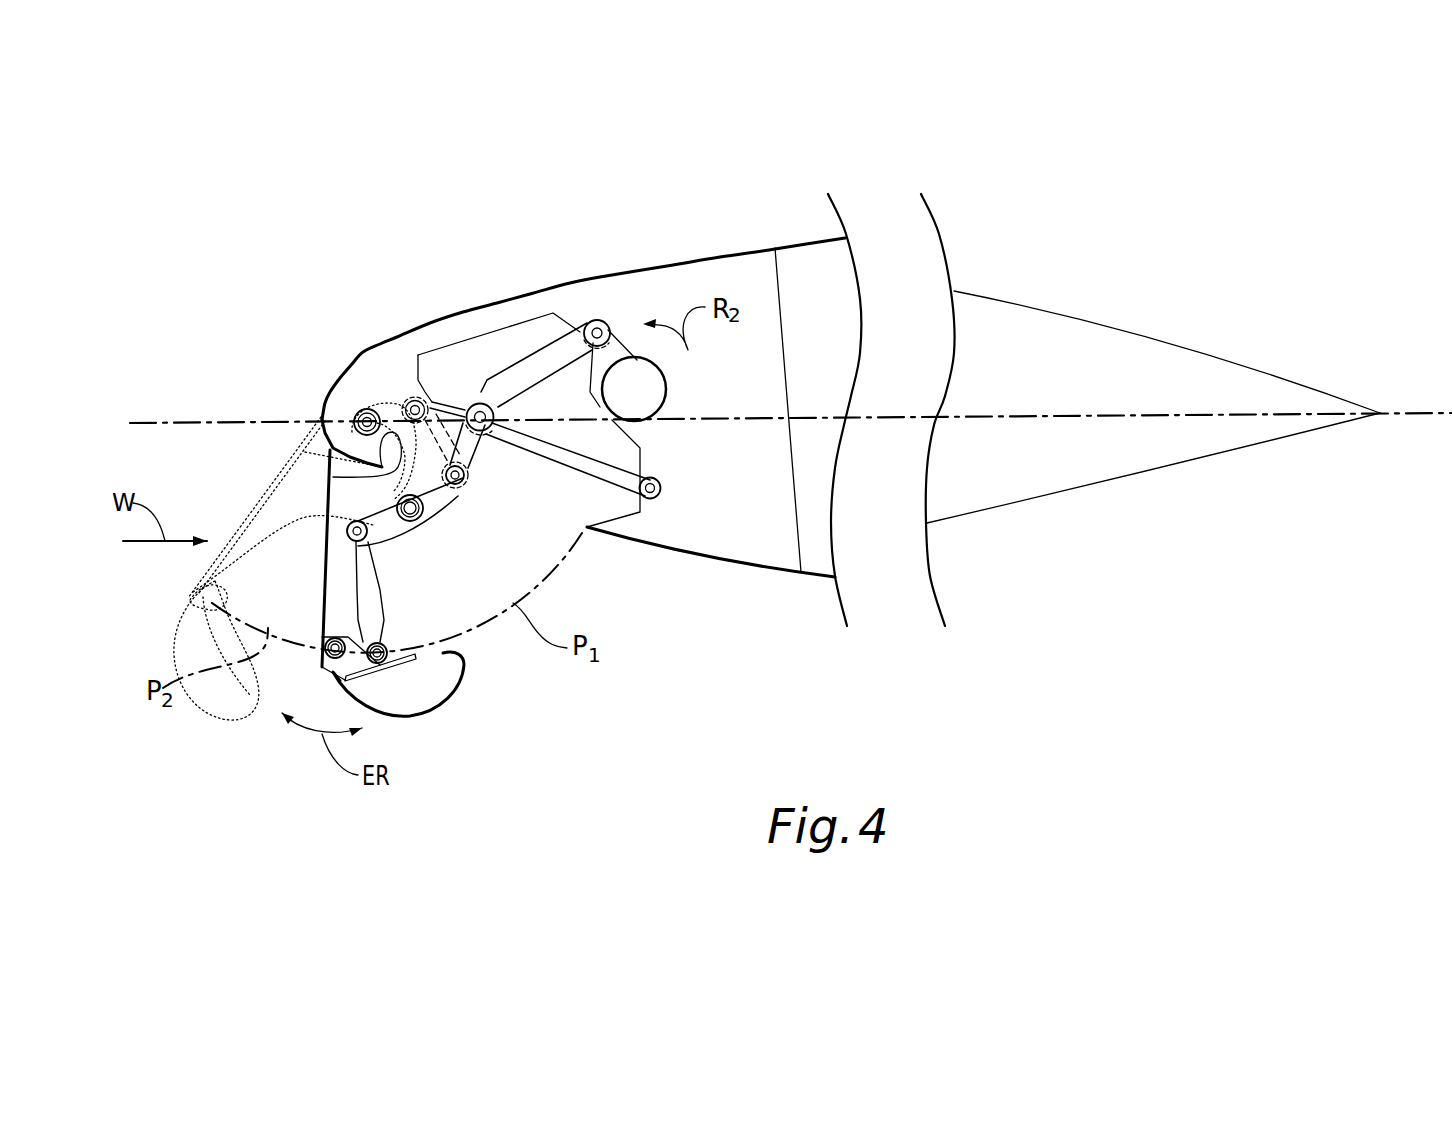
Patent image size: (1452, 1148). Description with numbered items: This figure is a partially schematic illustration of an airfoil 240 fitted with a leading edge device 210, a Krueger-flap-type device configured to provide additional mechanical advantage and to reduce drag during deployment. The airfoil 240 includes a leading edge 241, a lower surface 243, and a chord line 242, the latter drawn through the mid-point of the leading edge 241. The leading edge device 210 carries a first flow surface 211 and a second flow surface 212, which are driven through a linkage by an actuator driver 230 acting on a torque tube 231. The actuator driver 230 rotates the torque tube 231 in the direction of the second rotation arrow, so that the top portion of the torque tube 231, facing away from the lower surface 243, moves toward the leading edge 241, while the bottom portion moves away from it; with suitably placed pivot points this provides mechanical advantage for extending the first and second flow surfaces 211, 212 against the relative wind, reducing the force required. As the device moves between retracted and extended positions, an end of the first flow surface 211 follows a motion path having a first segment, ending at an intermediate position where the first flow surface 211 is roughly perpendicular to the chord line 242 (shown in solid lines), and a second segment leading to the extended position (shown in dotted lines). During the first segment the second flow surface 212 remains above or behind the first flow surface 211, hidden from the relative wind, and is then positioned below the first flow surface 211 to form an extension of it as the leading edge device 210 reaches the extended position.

The leading edge device 210 is at (288, 452).
The first flow surface 211 is at (318, 617).
The second flow surface 212 is at (445, 704).
The actuator driver 230 is at (684, 382).
The torque tube 231 is at (663, 404).
The airfoil 240 is at (982, 196).
The leading edge 241 is at (320, 414).
The chord line 242 is at (1008, 412).
The lower surface 243 is at (742, 638).